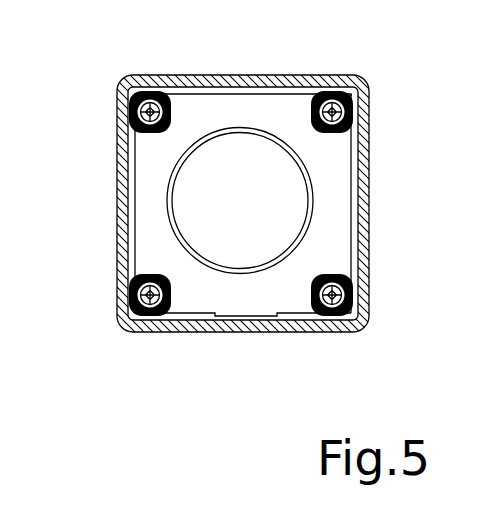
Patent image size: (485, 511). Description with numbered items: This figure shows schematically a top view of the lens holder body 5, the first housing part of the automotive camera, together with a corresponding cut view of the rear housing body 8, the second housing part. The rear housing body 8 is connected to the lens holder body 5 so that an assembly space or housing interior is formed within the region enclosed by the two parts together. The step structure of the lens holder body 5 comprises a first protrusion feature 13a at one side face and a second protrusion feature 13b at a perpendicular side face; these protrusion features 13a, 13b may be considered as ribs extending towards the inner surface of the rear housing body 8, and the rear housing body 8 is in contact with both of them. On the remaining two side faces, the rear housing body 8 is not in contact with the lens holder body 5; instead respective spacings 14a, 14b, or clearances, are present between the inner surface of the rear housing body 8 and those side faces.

The lens holder body 5 is at (283, 117).
The rear housing body 8 is at (372, 115).
The first protrusion feature 13a is at (131, 257).
The second protrusion feature 13b is at (230, 316).
The spacing 14a is at (357, 225).
The spacing 14b is at (212, 88).